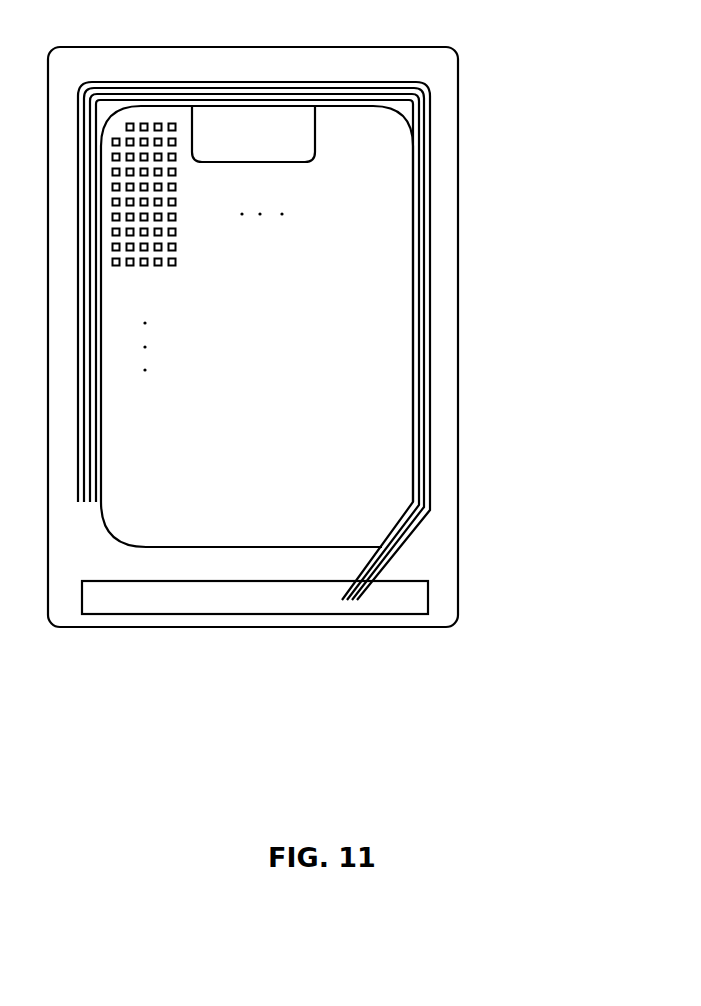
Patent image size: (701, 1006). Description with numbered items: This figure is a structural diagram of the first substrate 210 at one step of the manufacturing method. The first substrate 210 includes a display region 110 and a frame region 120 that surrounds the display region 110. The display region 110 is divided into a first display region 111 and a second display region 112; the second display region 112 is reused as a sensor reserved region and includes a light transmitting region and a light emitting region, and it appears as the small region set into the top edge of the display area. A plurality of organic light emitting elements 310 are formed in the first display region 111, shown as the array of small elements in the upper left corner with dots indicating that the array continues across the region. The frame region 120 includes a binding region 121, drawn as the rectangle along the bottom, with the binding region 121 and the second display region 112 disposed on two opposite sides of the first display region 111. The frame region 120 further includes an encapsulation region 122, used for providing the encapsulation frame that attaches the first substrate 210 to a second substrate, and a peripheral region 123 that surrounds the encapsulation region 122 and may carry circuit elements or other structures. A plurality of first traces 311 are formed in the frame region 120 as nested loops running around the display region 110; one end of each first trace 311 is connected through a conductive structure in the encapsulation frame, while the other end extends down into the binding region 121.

The first substrate 210 is at (100, 32).
The organic light emitting elements 310 is at (158, 124).
The first traces 311 is at (413, 84).
The display region 110 is at (533, 125).
The first display region 111 is at (380, 185).
The second display region 112 is at (293, 128).
The frame region 120 is at (536, 600).
The binding region 121 is at (429, 594).
The encapsulation region 122 is at (425, 290).
The peripheral region 123 is at (442, 240).